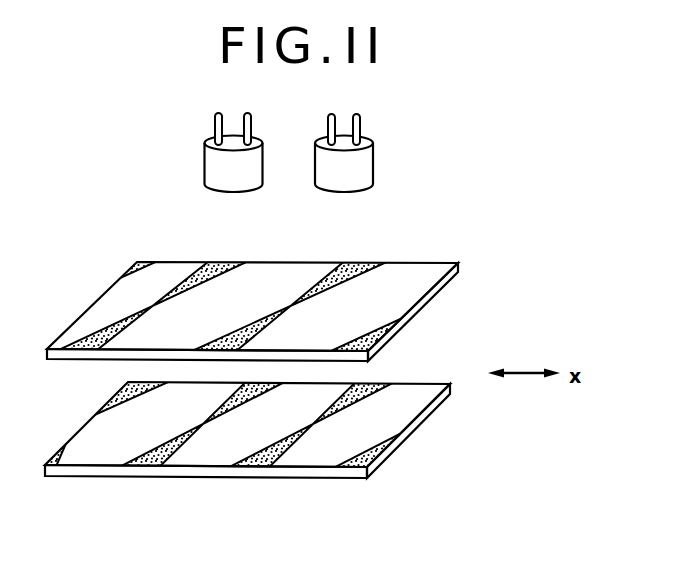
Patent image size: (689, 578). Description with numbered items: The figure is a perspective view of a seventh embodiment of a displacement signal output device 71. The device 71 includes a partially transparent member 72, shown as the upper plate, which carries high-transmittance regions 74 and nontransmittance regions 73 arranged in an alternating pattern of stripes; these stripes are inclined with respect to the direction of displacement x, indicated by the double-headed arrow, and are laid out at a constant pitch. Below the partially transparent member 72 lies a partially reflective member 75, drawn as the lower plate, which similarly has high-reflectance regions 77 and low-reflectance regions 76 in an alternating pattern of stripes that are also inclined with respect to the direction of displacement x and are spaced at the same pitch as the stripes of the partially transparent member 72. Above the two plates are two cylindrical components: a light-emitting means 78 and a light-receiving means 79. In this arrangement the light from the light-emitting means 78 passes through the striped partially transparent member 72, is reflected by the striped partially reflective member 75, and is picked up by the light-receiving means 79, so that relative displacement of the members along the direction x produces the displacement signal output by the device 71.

The displacement signal output device 71 is at (445, 196).
The partially transparent member 72 is at (430, 297).
The nontransmittance regions 73 is at (290, 298).
The high-transmittance regions 74 is at (313, 270).
The partially reflective member 75 is at (420, 420).
The low-reflectance regions 76 is at (172, 459).
The high-reflectance regions 77 is at (301, 458).
The light-emitting means 78 is at (210, 165).
The light-receiving means 79 is at (366, 168).